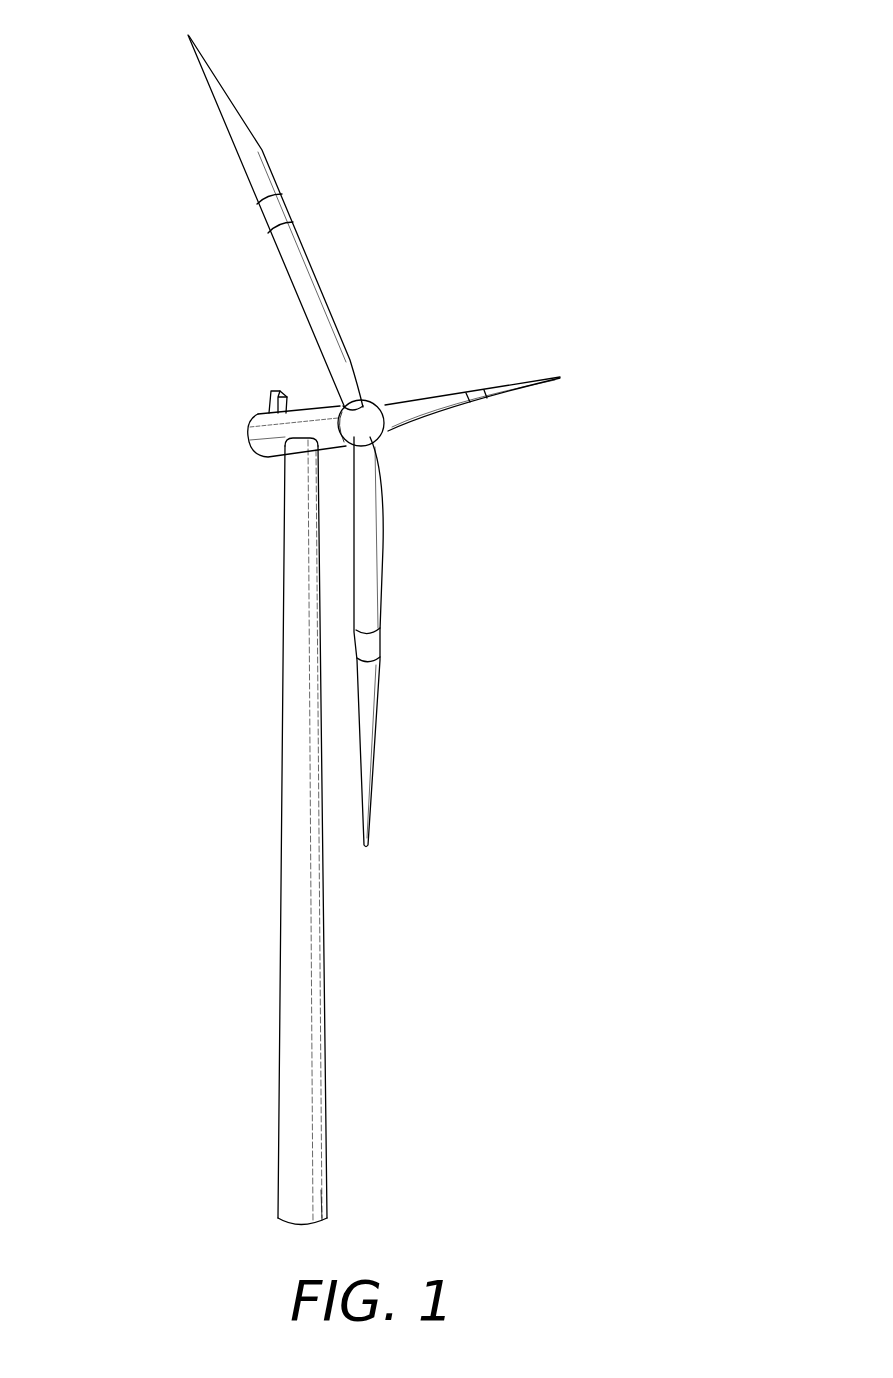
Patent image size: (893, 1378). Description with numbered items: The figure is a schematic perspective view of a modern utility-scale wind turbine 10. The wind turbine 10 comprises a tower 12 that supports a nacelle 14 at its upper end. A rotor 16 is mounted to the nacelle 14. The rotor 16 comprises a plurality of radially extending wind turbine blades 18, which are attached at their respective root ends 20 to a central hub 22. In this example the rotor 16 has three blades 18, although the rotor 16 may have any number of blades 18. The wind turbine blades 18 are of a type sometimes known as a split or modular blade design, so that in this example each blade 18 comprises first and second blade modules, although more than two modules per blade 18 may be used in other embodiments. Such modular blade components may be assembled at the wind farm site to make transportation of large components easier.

The wind turbine 10 is at (104, 238).
The tower 12 is at (283, 763).
The nacelle 14 is at (263, 427).
The rotor 16 is at (447, 313).
The wind turbine blades 18 is at (245, 148).
The root ends 20 is at (358, 405).
The central hub 22 is at (375, 420).